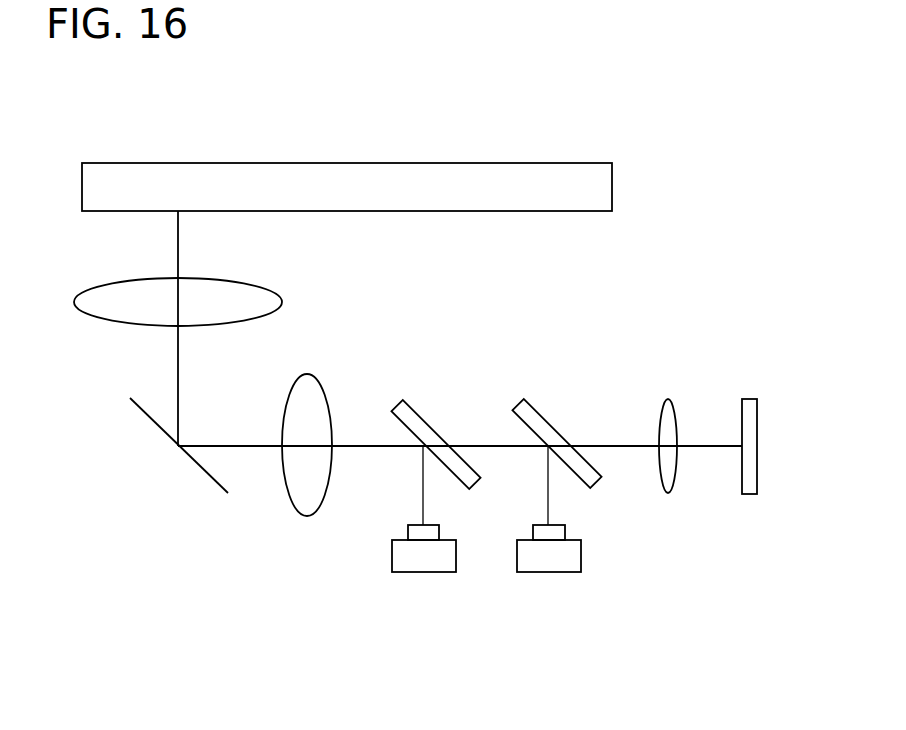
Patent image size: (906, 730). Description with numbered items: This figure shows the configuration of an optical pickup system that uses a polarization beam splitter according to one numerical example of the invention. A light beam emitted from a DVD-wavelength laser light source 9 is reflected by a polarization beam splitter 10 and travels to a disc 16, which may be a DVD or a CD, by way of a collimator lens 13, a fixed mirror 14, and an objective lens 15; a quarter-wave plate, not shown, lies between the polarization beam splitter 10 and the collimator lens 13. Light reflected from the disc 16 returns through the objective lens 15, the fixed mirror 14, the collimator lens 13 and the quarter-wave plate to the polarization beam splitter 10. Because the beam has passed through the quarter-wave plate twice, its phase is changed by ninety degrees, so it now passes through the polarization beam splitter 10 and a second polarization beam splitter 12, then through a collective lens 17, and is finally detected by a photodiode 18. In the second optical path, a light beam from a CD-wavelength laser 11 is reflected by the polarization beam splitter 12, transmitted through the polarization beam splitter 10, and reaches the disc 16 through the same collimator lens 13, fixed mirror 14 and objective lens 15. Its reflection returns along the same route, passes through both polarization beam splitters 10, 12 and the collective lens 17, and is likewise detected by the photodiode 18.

The DVD-wavelength laser light source 9 is at (420, 555).
The polarization beam splitter 10 is at (420, 430).
The CD-wavelength laser 11 is at (565, 556).
The polarization beam splitter 12 is at (548, 430).
The collimator lens 13 is at (308, 493).
The fixed mirror 14 is at (188, 457).
The objective lens 15 is at (115, 305).
The disc 16 is at (595, 193).
The collective lens 17 is at (670, 417).
The photodiode 18 is at (757, 415).